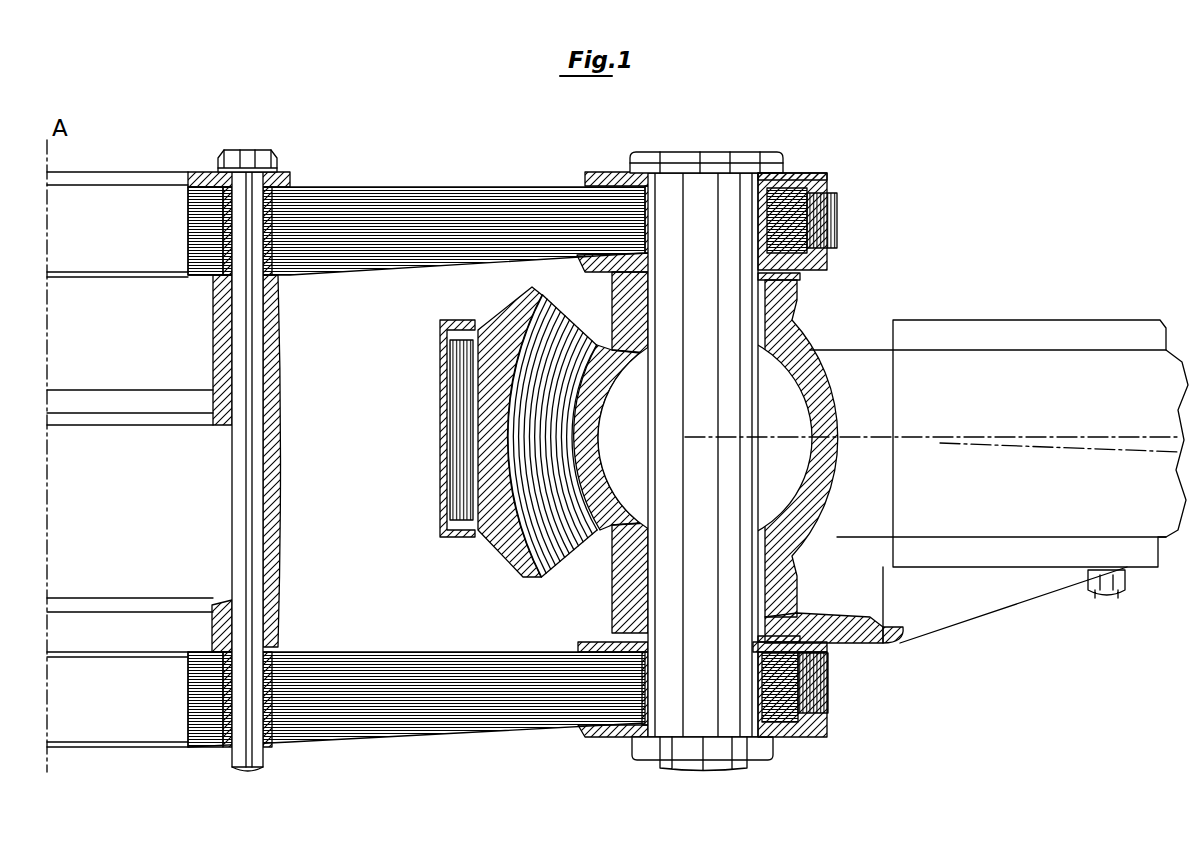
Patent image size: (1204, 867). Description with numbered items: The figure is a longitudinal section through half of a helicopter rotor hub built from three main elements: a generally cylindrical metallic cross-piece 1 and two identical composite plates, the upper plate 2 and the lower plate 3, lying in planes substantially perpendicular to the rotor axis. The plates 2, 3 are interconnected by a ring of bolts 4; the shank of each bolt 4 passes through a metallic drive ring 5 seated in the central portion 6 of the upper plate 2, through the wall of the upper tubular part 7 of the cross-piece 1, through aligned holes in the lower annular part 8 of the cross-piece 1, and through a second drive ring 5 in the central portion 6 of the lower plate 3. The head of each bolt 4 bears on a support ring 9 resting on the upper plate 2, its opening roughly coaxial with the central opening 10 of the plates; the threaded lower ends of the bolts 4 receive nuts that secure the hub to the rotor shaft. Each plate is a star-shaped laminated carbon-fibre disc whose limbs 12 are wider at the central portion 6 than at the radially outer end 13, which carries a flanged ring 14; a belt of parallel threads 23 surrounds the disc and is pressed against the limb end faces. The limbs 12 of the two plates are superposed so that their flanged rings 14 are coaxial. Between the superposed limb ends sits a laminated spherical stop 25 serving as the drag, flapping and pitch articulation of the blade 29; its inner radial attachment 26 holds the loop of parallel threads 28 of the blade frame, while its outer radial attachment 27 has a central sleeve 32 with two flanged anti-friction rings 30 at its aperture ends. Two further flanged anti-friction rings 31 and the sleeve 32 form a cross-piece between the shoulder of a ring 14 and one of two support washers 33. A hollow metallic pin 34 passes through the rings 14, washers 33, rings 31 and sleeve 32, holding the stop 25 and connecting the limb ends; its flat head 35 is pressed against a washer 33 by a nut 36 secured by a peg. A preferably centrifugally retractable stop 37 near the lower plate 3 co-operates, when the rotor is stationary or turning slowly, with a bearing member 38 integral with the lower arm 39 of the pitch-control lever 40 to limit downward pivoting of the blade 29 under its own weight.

The cross-piece 1 is at (290, 550).
The upper plate 2 is at (425, 180).
The lower plate 3 is at (455, 730).
The bolt 4 is at (245, 345).
The drive ring 5 is at (283, 190).
The central portion 6 is at (205, 235).
The upper tubular part 7 is at (220, 322).
The lower annular part 8 is at (278, 485).
The support ring 9 is at (200, 172).
The central opening 10 is at (188, 213).
The limb 12 is at (615, 213).
The radially outer end 13 is at (790, 200).
The flanged ring 14 is at (800, 265).
The belt of parallel threads 23 is at (820, 215).
The laminated spherical stop 25 is at (578, 568).
The inner radial attachment 26 is at (500, 330).
The outer radial attachment 27 is at (583, 440).
The loop of parallel threads 28 is at (460, 428).
The blade 29 is at (1163, 340).
The flanged anti-friction ring 30 is at (785, 315).
The flanged anti-friction ring 31 is at (655, 300).
The central sleeve 32 is at (775, 468).
The support washer 33 is at (800, 175).
The hollow metallic pin 34 is at (805, 400).
The flat head 35 is at (710, 155).
The nut 36 is at (745, 755).
The stop 37 is at (905, 635).
The bearing member 38 is at (985, 600).
The lower arm 39 is at (1138, 575).
The pitch-control lever 40 is at (1022, 318).